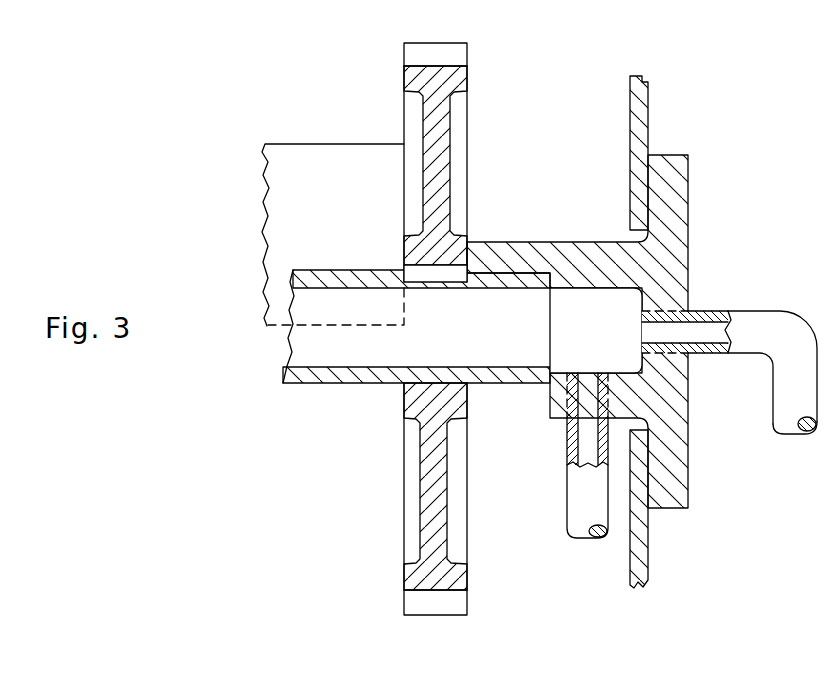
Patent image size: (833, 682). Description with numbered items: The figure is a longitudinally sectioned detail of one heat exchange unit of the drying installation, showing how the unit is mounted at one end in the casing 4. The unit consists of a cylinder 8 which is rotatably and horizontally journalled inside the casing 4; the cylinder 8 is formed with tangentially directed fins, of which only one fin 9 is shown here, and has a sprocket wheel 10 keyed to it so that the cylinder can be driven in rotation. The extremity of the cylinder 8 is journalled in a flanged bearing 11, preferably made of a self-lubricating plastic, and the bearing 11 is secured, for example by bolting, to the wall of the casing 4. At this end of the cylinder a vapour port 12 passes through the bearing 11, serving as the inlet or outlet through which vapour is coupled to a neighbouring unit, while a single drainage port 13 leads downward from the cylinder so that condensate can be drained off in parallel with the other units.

The casing 4 is at (640, 107).
The cylinder 8 is at (350, 372).
The tangentially directed fin 9 is at (323, 157).
The sprocket wheel 10 is at (453, 73).
The flanged bearing 11 is at (683, 205).
The vapour port 12 is at (683, 332).
The drainage port 13 is at (587, 412).